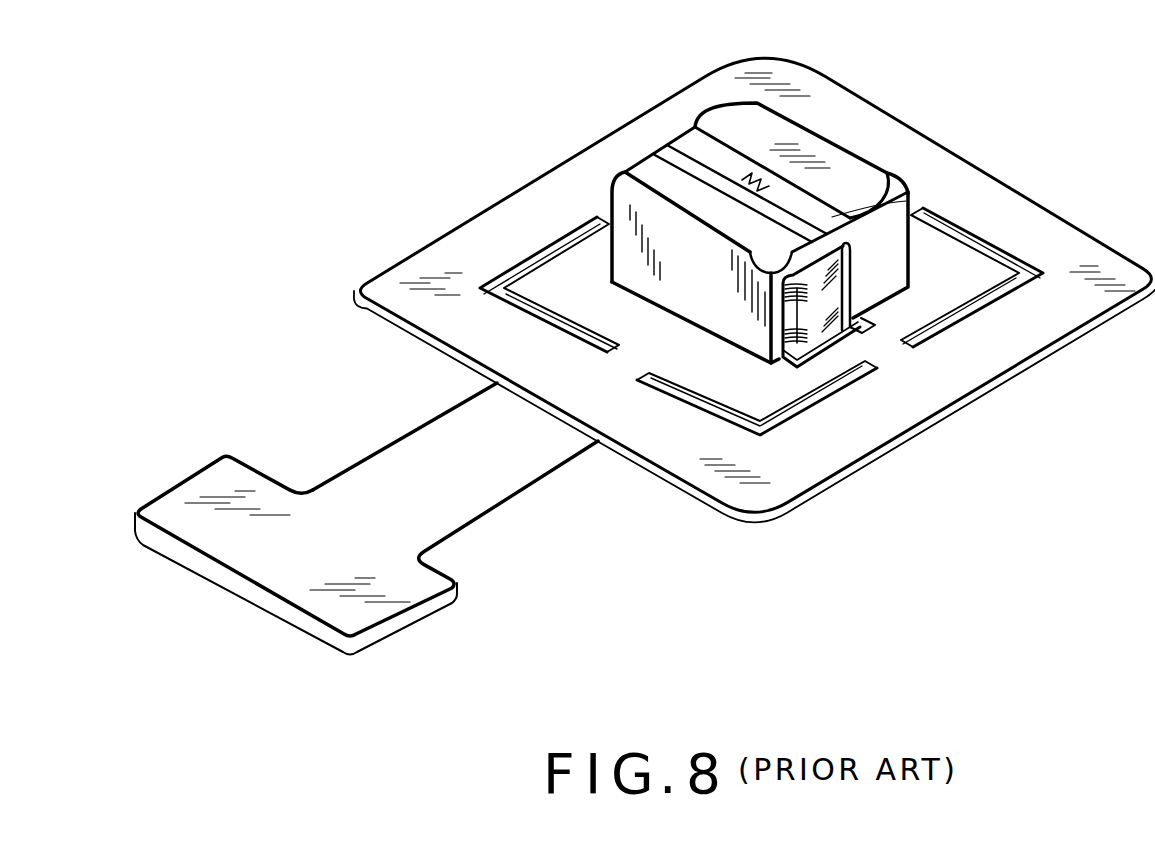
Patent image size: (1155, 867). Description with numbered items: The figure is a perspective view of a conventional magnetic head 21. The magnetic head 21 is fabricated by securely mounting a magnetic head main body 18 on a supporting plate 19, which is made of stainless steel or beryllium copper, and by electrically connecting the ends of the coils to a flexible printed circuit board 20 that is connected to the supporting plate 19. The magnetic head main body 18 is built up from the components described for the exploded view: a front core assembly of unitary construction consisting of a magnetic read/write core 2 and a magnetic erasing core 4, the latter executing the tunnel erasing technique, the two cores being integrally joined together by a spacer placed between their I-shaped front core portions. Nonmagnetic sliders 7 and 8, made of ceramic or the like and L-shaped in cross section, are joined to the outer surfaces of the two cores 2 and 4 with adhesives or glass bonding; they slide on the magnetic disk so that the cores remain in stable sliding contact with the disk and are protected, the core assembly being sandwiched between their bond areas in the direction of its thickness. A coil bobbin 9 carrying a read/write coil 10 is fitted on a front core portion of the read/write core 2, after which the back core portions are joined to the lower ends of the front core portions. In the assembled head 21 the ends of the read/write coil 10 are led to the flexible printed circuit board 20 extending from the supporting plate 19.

The magnetic head 21 is at (661, 100).
The supporting plate 19 is at (412, 263).
The flexible printed circuit board 20 is at (497, 482).
The magnetic head main body 18 is at (607, 178).
The magnetic erasing core 4 is at (660, 153).
The nonmagnetic slider 8 is at (858, 177).
The magnetic read/write core 2 is at (905, 200).
The nonmagnetic slider 7 is at (730, 327).
The coil bobbin 9 is at (842, 251).
The read/write coil 10 is at (835, 338).